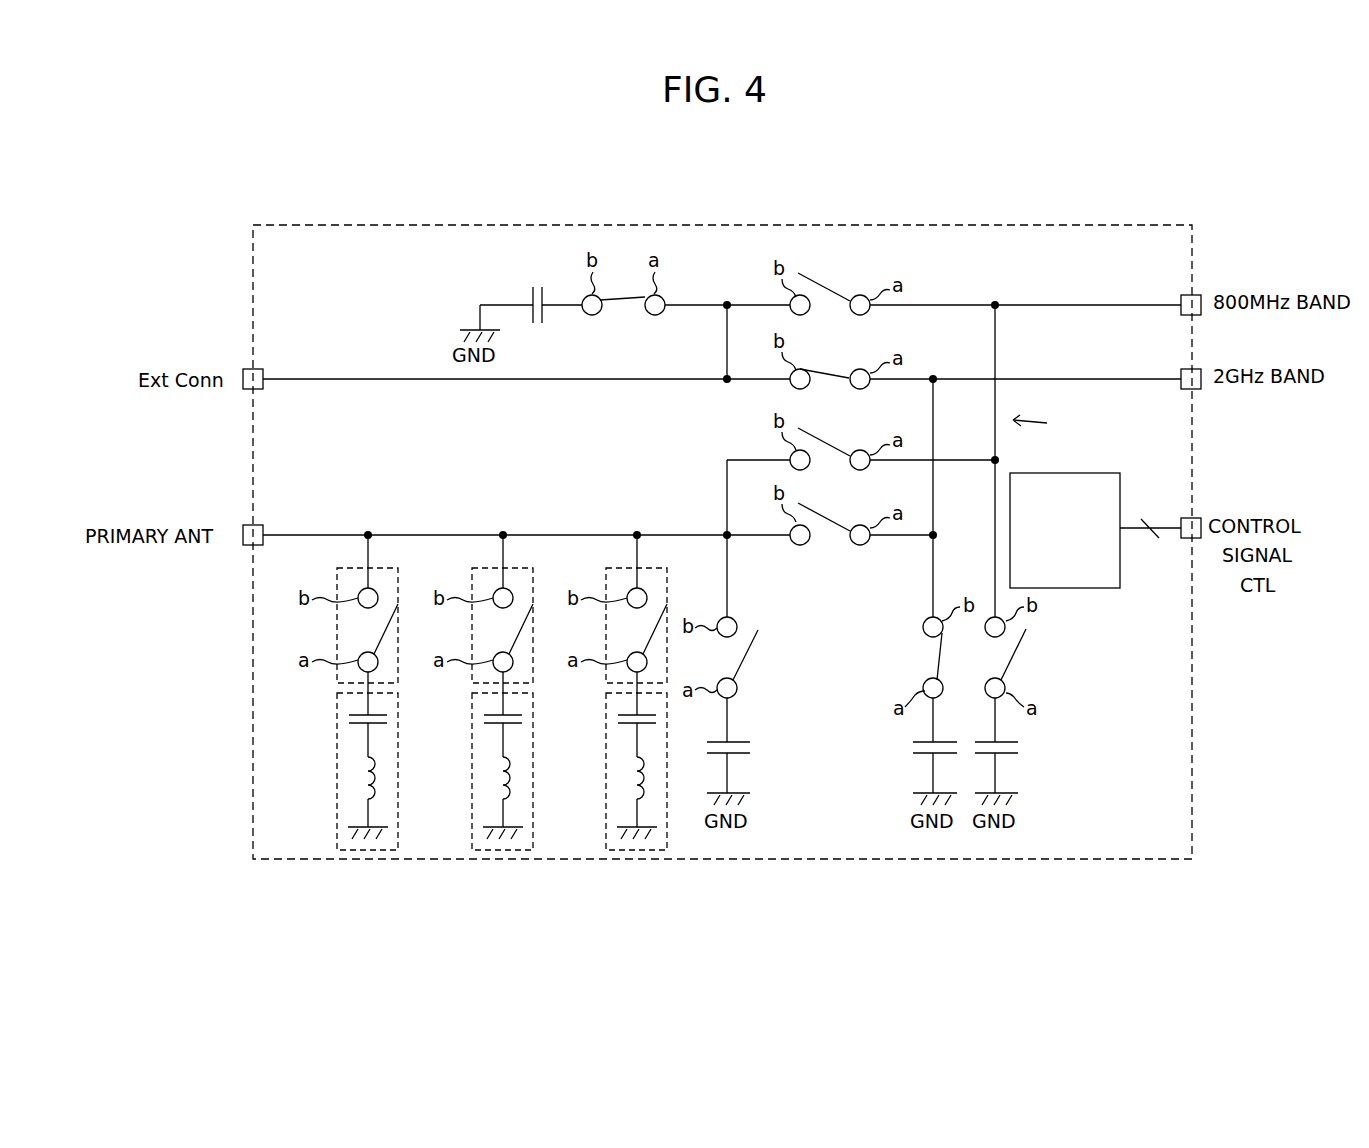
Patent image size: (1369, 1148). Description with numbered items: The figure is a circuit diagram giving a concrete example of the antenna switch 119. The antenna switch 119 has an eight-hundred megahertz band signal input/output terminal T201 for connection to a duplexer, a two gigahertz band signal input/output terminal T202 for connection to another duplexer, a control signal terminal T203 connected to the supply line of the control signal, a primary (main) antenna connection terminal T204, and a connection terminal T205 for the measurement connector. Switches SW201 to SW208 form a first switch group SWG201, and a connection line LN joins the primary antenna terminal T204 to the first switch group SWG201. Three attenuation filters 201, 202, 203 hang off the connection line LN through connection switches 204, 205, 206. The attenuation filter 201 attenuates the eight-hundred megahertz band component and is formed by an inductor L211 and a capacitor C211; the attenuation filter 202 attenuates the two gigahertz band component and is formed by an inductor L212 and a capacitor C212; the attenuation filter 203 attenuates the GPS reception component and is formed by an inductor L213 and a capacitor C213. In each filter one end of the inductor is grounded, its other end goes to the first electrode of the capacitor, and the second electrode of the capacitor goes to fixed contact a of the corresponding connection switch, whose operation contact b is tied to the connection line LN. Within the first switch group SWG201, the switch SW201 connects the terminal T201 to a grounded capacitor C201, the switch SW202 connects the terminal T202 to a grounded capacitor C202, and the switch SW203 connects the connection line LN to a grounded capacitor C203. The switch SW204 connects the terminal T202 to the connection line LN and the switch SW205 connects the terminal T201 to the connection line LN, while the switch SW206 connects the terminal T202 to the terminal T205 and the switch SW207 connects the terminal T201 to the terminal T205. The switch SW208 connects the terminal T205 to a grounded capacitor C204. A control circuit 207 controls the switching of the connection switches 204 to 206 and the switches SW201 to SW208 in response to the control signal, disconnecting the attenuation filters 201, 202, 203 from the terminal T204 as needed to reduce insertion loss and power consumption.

The antenna switch 119 is at (816, 225).
The control circuit 207 is at (1121, 491).
The attenuation filter 201 is at (337, 822).
The attenuation filter 202 is at (472, 822).
The attenuation filter 203 is at (606, 822).
The connection switch 204 is at (337, 636).
The connection switch 205 is at (472, 636).
The connection switch 206 is at (606, 636).
The 800 MHz band signal use input/output terminal T201 is at (1201, 294).
The 2 GHz band signal use input/output terminal T202 is at (1201, 367).
The control signal use terminal T203 is at (1202, 517).
The primary antenna use connection terminal T204 is at (245, 528).
The connection terminal T205 is at (245, 371).
The capacitor C201 is at (1025, 748).
The capacitor C202 is at (909, 744).
The capacitor C203 is at (752, 744).
The capacitor C204 is at (535, 284).
The capacitor C211 is at (346, 723).
The capacitor C212 is at (481, 723).
The capacitor C213 is at (615, 723).
The inductor L211 is at (360, 777).
The inductor L212 is at (495, 777).
The inductor L213 is at (629, 777).
The switch SW201 is at (1022, 653).
The switch SW202 is at (922, 651).
The switch SW203 is at (752, 661).
The switch SW204 is at (862, 501).
The switch SW205 is at (862, 431).
The switch SW206 is at (862, 349).
The switch SW207 is at (862, 276).
The switch SW208 is at (624, 318).
The first switch group SWG201 is at (1073, 421).
The connection line LN is at (694, 530).